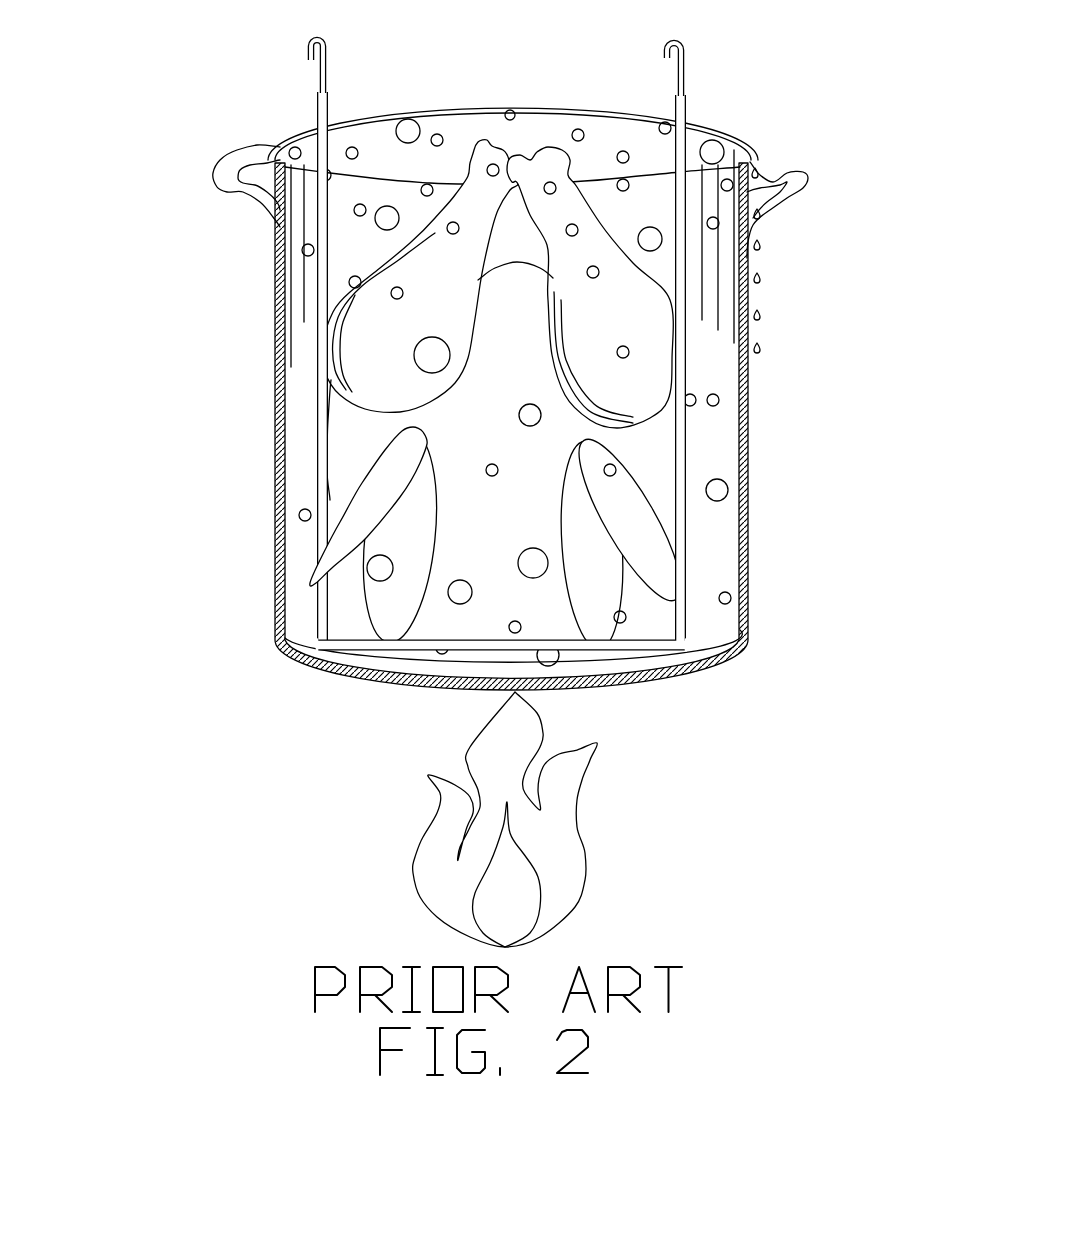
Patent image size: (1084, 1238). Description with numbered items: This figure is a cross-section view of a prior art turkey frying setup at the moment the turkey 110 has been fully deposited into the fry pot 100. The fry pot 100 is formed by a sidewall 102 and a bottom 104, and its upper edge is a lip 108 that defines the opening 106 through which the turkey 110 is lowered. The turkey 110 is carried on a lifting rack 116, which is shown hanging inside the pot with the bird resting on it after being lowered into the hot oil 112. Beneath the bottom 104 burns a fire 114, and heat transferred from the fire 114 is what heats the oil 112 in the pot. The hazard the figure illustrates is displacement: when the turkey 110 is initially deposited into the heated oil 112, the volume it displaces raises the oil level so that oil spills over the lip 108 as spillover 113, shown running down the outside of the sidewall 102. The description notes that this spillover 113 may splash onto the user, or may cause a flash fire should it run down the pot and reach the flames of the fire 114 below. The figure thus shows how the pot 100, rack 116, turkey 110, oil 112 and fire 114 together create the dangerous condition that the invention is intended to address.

The fry pot 100 is at (515, 427).
The sidewall 102 is at (278, 493).
The bottom 104 is at (800, 727).
The opening 106 is at (120, 73).
The lip 108 is at (122, 182).
The turkey 110 is at (508, 395).
The oil 112 is at (713, 440).
The spillover 113 is at (774, 288).
The fire 114 is at (542, 840).
The lifting rack 116 is at (469, 345).